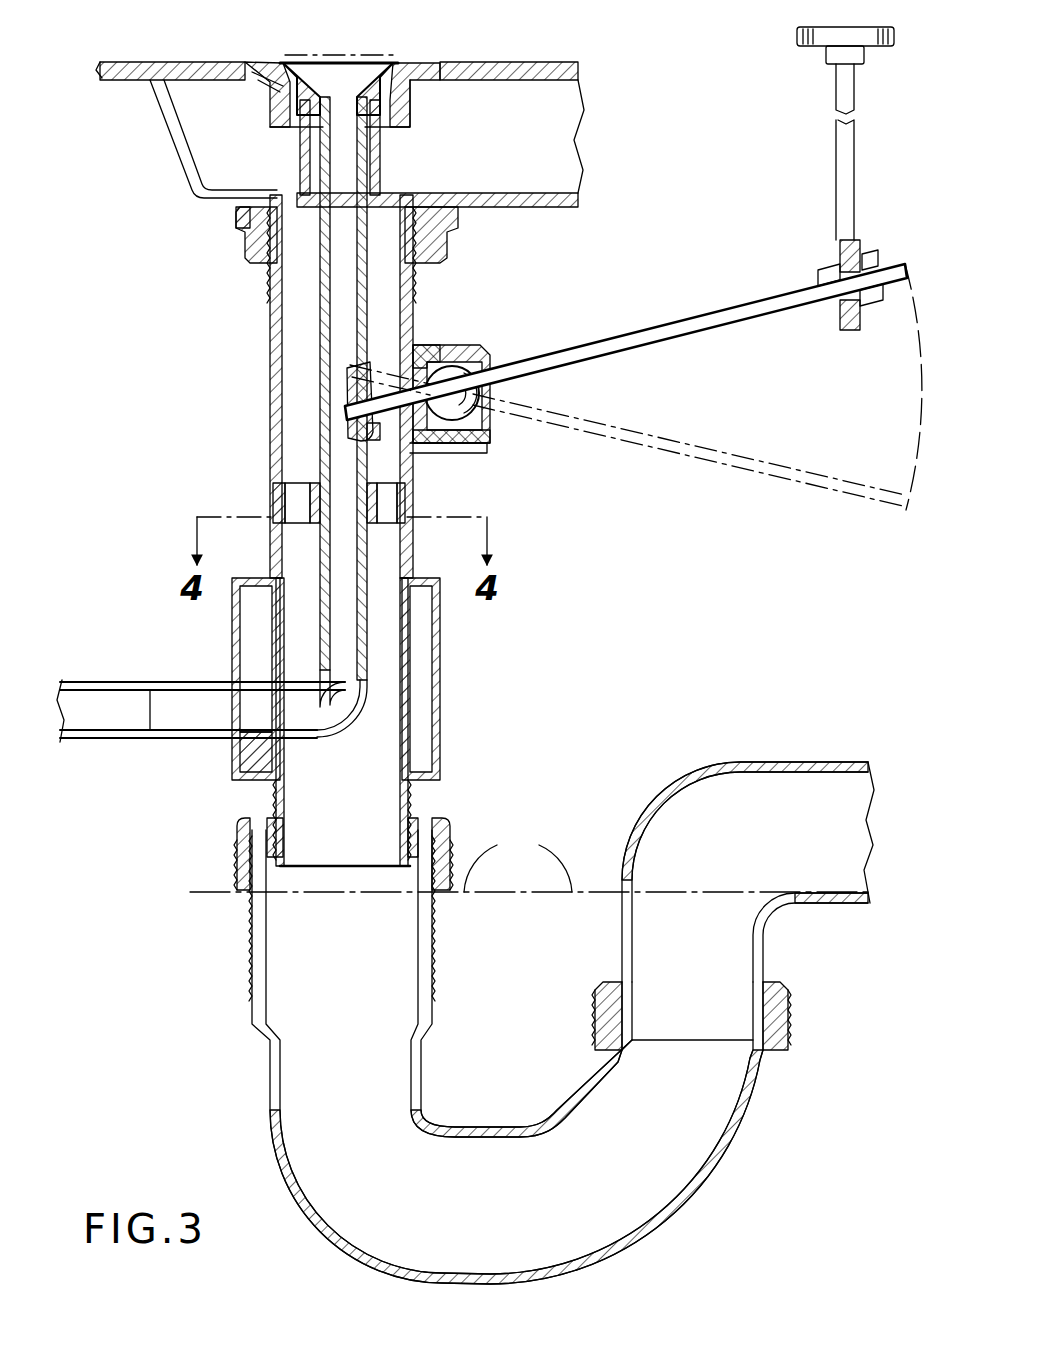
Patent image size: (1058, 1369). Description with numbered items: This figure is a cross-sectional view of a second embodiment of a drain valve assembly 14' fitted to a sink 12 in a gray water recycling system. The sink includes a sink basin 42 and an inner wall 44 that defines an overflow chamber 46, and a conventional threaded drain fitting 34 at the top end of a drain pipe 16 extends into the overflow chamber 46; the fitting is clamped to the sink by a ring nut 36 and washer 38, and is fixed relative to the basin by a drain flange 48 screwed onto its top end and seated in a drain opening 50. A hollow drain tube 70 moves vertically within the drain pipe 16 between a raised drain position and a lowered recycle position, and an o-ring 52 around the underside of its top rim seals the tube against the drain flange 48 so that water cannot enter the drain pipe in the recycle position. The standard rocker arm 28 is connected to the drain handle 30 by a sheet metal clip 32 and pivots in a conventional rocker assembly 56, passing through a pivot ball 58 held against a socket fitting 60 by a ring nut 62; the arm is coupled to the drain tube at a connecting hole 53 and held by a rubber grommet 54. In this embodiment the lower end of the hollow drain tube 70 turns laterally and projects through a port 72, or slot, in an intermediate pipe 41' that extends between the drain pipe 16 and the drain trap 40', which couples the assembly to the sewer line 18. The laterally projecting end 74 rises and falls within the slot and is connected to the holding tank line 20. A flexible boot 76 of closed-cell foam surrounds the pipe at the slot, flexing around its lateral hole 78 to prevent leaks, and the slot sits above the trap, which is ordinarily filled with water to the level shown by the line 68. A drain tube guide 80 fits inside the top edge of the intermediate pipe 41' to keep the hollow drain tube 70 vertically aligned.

The sink 12 is at (478, 52).
The drain valve assembly 14' is at (489, 864).
The drain pipe 16 is at (268, 345).
The sewer line 18 is at (763, 953).
The holding tank line 20 is at (96, 682).
The rocker arm 28 is at (642, 340).
The drain handle 30 is at (832, 207).
The sheet metal clip 32 is at (820, 284).
The threaded drain fitting 34 is at (385, 185).
The ring nut 36 is at (242, 250).
The washer 38 is at (234, 214).
The drain trap 40' is at (497, 1057).
The intermediate pipe 41' is at (326, 835).
The sink basin 42 is at (186, 62).
The inner wall 44 is at (535, 193).
The overflow chamber 46 is at (474, 136).
The drain flange 48 is at (412, 66).
The drain opening 50 is at (268, 92).
The o-ring 52 is at (270, 68).
The connecting hole 53 is at (380, 432).
The rubber grommet 54 is at (347, 404).
The rocker assembly 56 is at (442, 340).
The pivot ball 58 is at (490, 430).
The socket fitting 60 is at (436, 352).
The ring nut 62 is at (485, 445).
The water level line 68 is at (518, 866).
The hollow drain tube 70 is at (343, 58).
The port 72 is at (275, 685).
The laterally projecting end 74 is at (259, 752).
The flexible boot 76 is at (255, 580).
The lateral hole 78 is at (205, 740).
The drain tube guide 80 is at (305, 490).